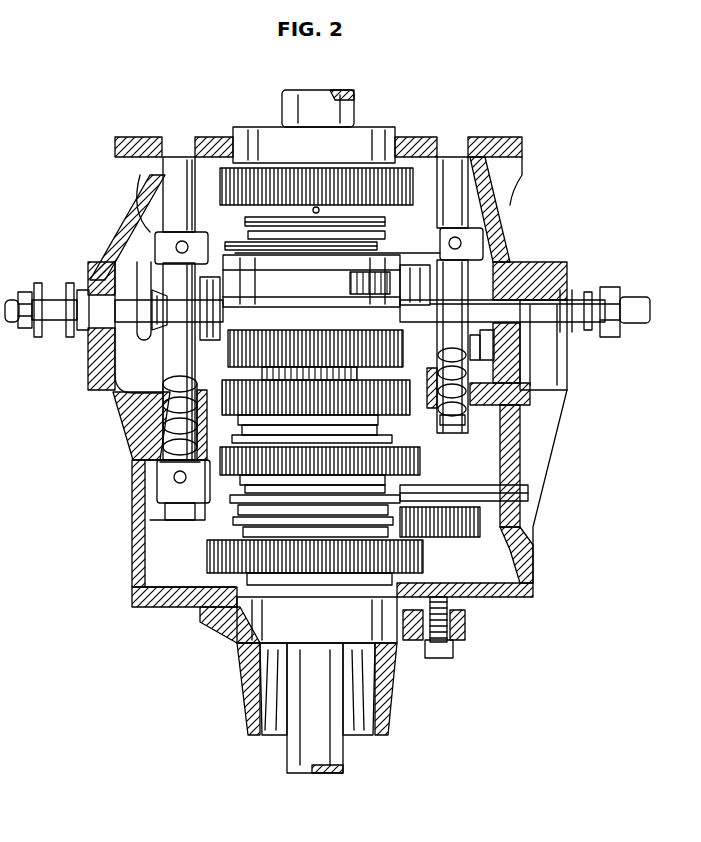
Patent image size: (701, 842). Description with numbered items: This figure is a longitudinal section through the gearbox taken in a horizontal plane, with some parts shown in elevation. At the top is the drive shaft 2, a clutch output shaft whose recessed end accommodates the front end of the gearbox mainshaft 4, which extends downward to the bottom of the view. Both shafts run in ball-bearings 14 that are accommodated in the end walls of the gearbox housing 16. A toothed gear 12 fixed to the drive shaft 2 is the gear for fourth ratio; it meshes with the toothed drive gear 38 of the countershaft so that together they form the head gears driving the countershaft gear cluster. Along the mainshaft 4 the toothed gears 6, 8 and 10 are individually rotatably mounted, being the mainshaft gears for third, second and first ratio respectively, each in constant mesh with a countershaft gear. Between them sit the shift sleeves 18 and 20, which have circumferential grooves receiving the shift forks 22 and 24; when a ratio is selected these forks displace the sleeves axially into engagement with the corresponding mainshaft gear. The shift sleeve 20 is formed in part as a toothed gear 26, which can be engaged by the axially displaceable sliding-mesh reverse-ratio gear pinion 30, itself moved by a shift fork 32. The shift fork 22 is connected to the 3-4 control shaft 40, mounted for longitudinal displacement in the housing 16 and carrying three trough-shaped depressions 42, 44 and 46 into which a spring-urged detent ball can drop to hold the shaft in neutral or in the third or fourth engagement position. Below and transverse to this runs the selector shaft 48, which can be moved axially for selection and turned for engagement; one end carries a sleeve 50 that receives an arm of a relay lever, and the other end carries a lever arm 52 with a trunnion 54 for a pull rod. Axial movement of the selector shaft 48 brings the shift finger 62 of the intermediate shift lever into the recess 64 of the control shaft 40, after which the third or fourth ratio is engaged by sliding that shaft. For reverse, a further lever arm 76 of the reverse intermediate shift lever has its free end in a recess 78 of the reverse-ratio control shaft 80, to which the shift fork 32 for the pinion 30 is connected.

The drive shaft 2 is at (352, 105).
The gearbox mainshaft 4 is at (320, 750).
The mainshaft gear for third ratio 6 is at (233, 348).
The mainshaft gear for second ratio 8 is at (173, 406).
The mainshaft gear for first ratio 10 is at (210, 563).
The toothed gear for fourth ratio 12 is at (282, 198).
The ball-bearings 14 is at (260, 149).
The gearbox housing 16 is at (535, 583).
The shift sleeve 18 is at (190, 270).
The shift sleeve 20 is at (410, 515).
The shift fork 22 is at (410, 246).
The shift fork 24 is at (237, 490).
The toothed gear 26 is at (175, 457).
The reverse-ratio gear pinion 30 is at (535, 525).
The shift fork 32 is at (515, 492).
The toothed drive gear 38 is at (275, 190).
The 3-4 control shaft 40 is at (462, 200).
The trough-shaped depression 42 is at (433, 300).
The trough-shaped depression 44 is at (438, 395).
The trough-shaped depression 46 is at (455, 423).
The selector shaft 48 is at (606, 330).
The sleeve 50 is at (55, 300).
The lever arm 52 is at (586, 294).
The trunnion 54 is at (635, 310).
The shift finger 62 is at (500, 263).
The recess 64 is at (482, 318).
The lever arm 76 is at (488, 350).
The recess 78 is at (500, 342).
The control shaft for the reverse ratio 80 is at (505, 425).